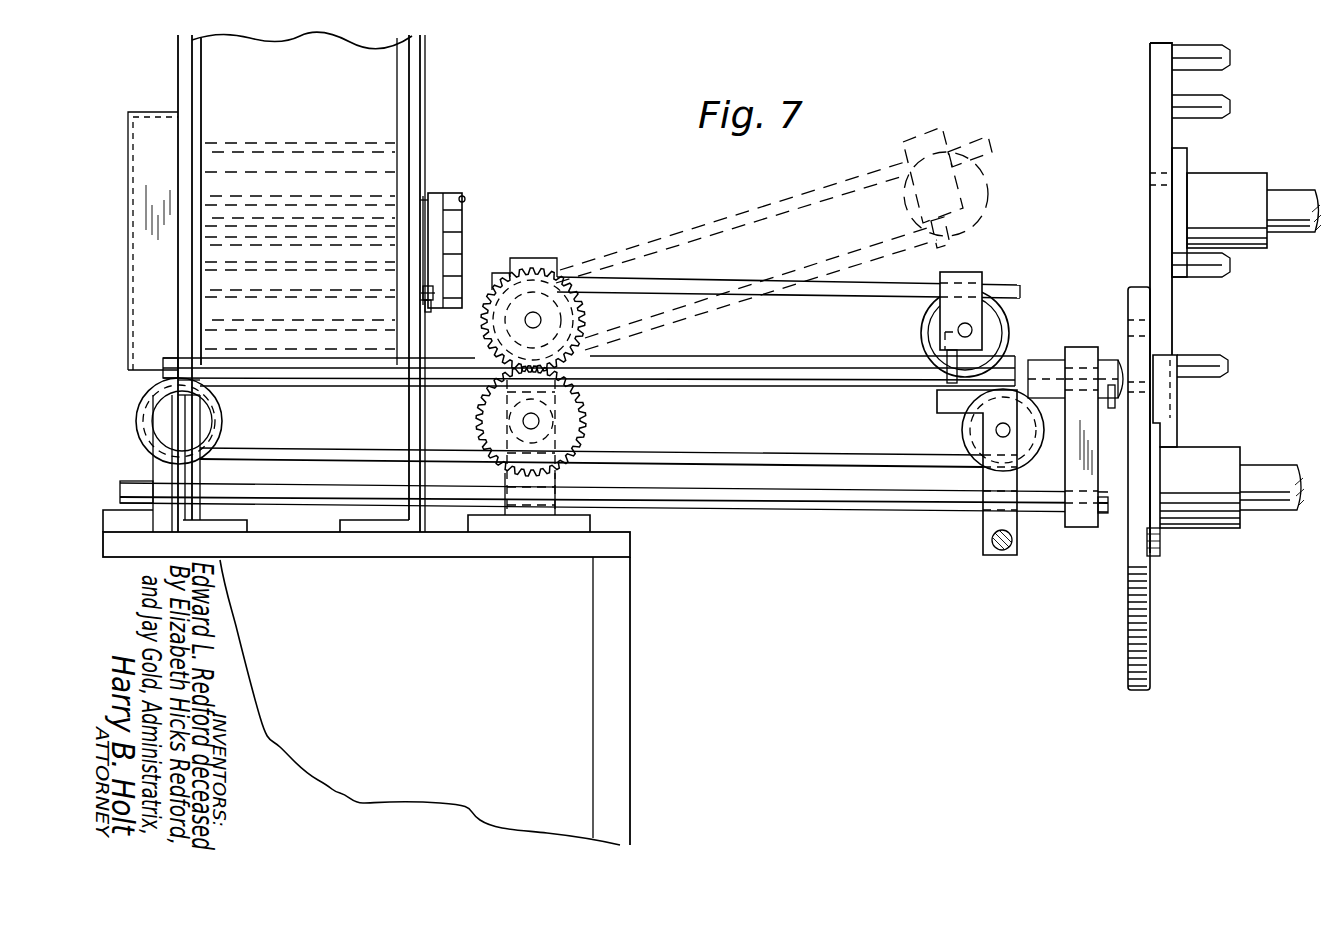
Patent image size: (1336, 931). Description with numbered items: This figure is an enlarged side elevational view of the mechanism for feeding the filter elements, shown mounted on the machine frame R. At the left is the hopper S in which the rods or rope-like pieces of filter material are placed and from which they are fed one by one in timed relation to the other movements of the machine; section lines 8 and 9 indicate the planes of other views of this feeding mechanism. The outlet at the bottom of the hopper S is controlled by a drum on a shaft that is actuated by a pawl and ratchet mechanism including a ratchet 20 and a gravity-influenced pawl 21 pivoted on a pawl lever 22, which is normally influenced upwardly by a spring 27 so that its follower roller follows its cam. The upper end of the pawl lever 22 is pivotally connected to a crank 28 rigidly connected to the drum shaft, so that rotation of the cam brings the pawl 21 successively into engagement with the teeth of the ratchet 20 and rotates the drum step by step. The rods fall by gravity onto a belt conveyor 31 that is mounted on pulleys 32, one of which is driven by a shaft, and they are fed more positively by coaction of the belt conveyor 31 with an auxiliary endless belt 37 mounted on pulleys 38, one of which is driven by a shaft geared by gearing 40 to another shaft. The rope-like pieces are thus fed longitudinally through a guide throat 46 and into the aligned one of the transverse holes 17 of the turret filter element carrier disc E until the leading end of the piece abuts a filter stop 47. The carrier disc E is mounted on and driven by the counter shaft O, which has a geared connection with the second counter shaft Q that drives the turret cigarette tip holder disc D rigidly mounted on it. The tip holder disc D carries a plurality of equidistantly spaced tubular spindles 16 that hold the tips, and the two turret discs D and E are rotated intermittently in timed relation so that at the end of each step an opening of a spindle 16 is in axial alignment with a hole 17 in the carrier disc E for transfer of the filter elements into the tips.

The hopper S is at (176, 108).
The section line 8- 8 is at (310, 55).
The section line 9- 9 is at (455, 70).
The crank 28 is at (437, 192).
The pawl lever 22 is at (447, 193).
The pawl 21 is at (466, 200).
The ratchet 20 is at (455, 245).
The spring 27 is at (428, 293).
The pulleys 32 is at (213, 418).
The gearing 40 is at (557, 370).
The auxiliary endless belt 37 is at (733, 382).
The belt conveyor 31 is at (830, 388).
The pulleys 38 is at (976, 288).
The guide throat 46 is at (1045, 358).
The transverse holes 17 is at (1138, 375).
The filter stop 47 is at (1178, 418).
The turret cigarette tip holder disc D is at (1150, 90).
The spindles 16 is at (1212, 118).
The second counter shaft Q is at (1290, 188).
The counter shaft O is at (1270, 498).
The turret filter element carrier disc E is at (1128, 637).
The machine frame R is at (634, 558).